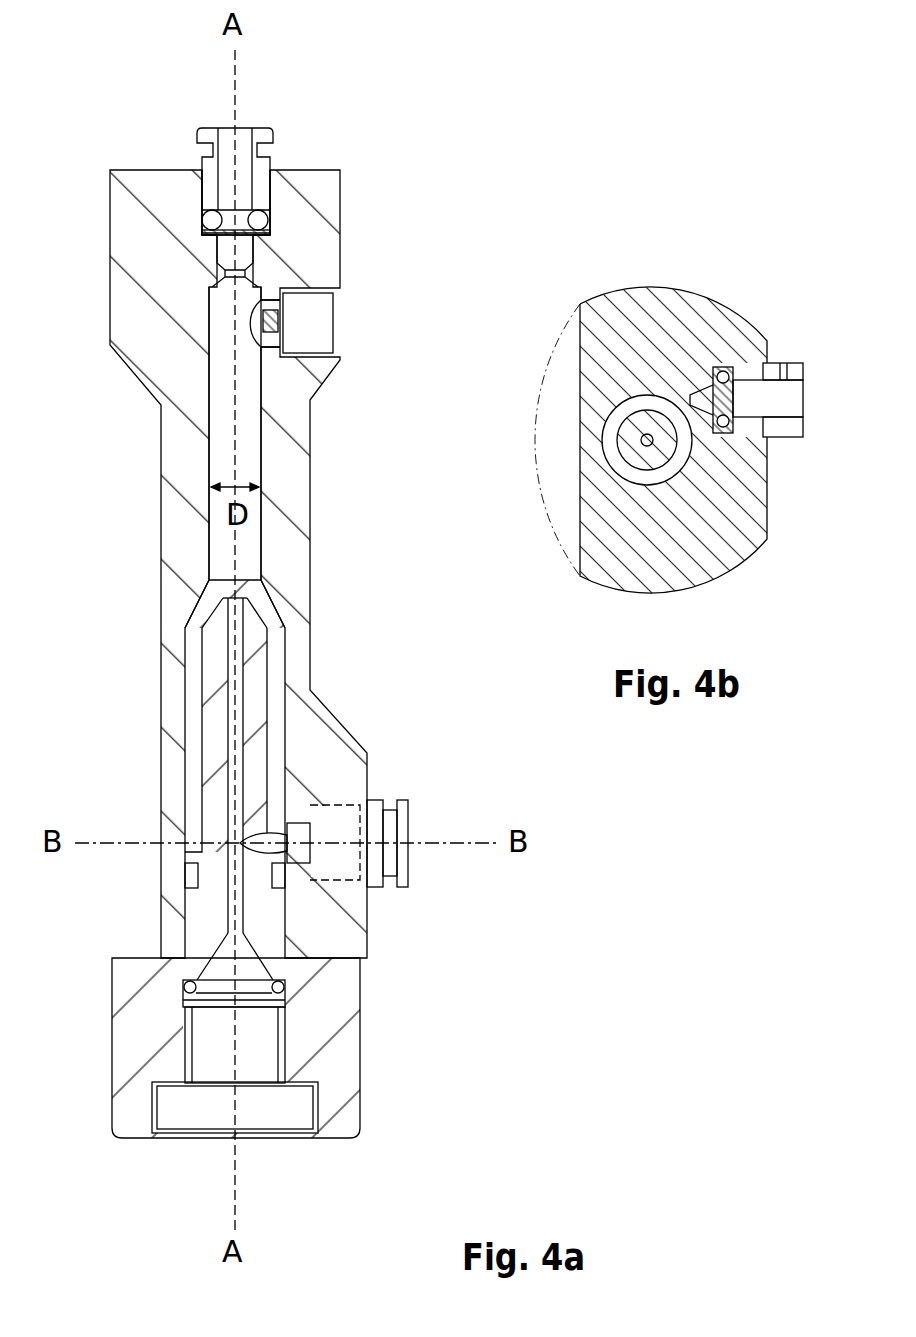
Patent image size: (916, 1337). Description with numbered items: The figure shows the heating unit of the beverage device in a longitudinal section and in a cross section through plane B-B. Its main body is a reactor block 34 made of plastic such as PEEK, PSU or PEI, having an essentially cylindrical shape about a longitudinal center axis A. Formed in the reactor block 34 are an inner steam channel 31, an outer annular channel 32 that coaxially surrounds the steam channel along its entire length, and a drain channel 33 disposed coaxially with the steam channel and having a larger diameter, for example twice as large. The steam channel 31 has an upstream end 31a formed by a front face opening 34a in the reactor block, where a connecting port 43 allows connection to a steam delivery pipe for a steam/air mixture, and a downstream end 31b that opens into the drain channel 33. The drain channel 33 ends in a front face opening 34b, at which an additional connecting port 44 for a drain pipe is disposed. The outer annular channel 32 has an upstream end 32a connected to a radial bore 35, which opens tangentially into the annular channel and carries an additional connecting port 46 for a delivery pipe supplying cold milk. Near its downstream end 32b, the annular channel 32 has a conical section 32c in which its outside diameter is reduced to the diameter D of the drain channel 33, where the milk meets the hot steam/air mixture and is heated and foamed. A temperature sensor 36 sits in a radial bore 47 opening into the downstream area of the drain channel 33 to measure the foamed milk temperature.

In FIG. 4a, the inner steam channel 31 is at (228, 718).
In FIG. 4b, the inner steam channel 31 is at (645, 438).
In FIG. 4a, the upstream end of steam channel 31a is at (218, 1128).
In FIG. 4a, the downstream end of steam channel 31b is at (210, 583).
In FIG. 4a, the outer annular channel 32 is at (275, 700).
In FIG. 4b, the outer annular channel 32 is at (630, 472).
In FIG. 4a, the upstream end of annular channel 32a is at (290, 858).
In FIG. 4b, the upstream end of annular channel 32a is at (647, 400).
In FIG. 4a, the downstream end of annular channel 32b is at (252, 590).
In FIG. 4a, the conical section 32c is at (207, 612).
In FIG. 4a, the drain channel 33 is at (250, 438).
In FIG. 4a, the reactor block 34 is at (152, 352).
In FIG. 4b, the reactor block 34 is at (705, 523).
In FIG. 4a, the front face opening 34a is at (300, 1132).
In FIG. 4a, the front face opening 34b is at (217, 207).
In FIG. 4a, the radial bore 35 is at (302, 835).
In FIG. 4b, the radial bore 35 is at (683, 395).
In FIG. 4a, the temperature sensor 36 is at (282, 315).
In FIG. 4a, the connecting port 43 is at (188, 1098).
In FIG. 4a, the connecting port 44 is at (258, 163).
In FIG. 4a, the connecting port 46 is at (378, 830).
In FIG. 4b, the connecting port 46 is at (775, 417).
In FIG. 4a, the radial bore 47 is at (272, 337).